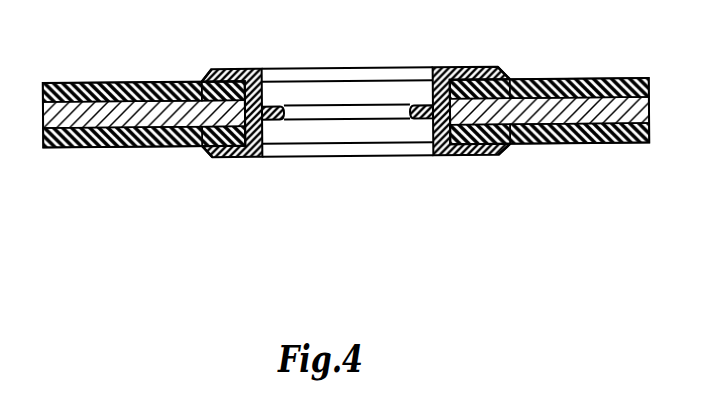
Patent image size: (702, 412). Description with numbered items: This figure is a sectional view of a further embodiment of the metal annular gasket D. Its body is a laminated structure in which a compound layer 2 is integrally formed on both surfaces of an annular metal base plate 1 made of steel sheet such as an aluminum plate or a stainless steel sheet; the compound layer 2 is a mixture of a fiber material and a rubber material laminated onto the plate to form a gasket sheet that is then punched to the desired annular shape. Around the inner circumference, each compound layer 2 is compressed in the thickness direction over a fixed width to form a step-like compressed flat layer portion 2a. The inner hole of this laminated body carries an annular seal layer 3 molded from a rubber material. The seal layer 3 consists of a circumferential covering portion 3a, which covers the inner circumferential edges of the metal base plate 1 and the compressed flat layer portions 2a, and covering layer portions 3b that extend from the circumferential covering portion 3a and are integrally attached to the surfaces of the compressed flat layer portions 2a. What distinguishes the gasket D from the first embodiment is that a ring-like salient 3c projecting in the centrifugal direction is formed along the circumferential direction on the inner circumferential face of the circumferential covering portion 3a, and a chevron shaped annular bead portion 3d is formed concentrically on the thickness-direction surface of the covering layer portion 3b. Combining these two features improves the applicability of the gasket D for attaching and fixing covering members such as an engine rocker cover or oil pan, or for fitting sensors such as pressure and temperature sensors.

The metal annular gasket D is at (622, 70).
The annular metal base plate 1 is at (641, 107).
The compound layer 2 is at (137, 81).
The compressed flat layer portion 2a is at (200, 82).
The annular seal layer 3 is at (450, 68).
The circumferential covering portion 3a is at (431, 121).
The covering layer portion 3b is at (510, 79).
The ring-like salient 3c is at (293, 120).
The chevron shaped annular bead portion 3d is at (483, 68).